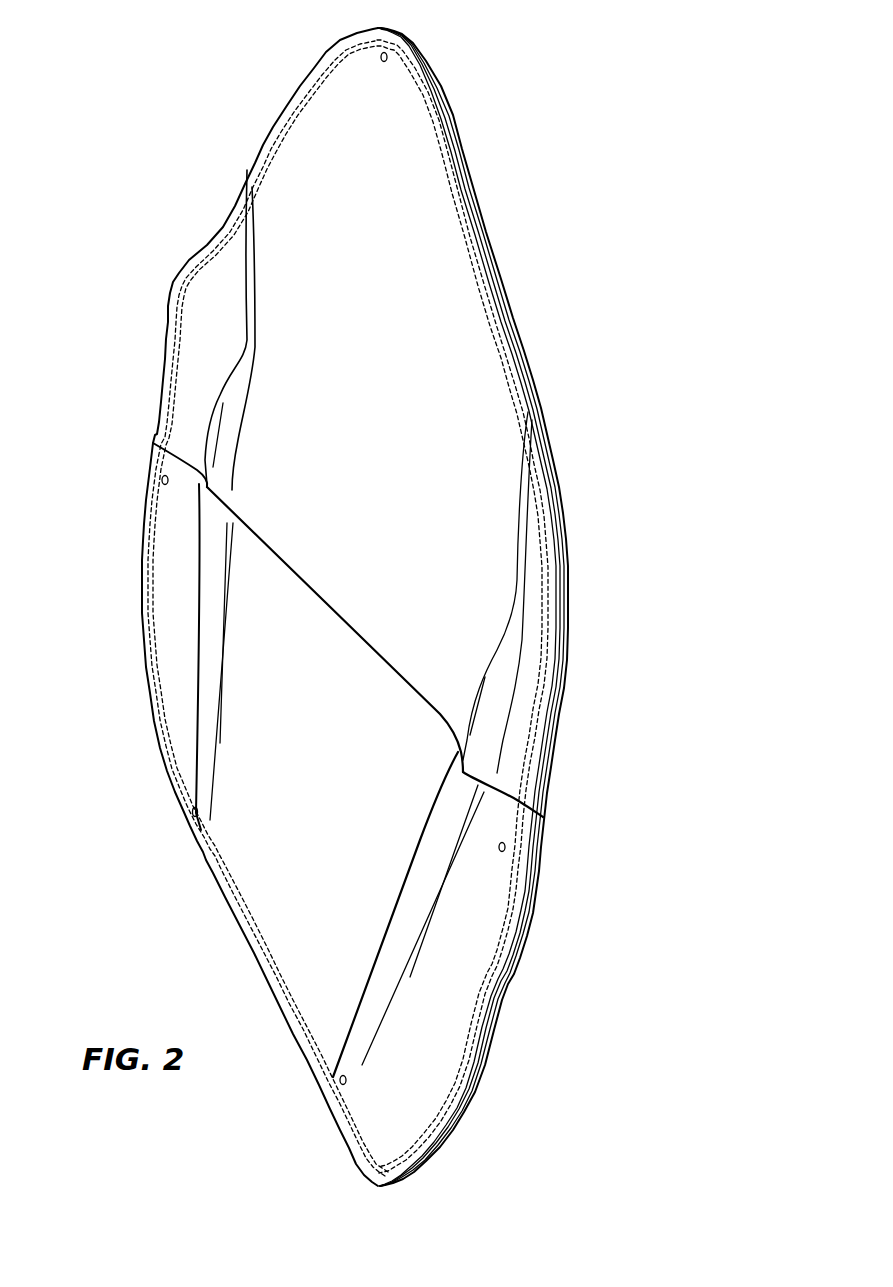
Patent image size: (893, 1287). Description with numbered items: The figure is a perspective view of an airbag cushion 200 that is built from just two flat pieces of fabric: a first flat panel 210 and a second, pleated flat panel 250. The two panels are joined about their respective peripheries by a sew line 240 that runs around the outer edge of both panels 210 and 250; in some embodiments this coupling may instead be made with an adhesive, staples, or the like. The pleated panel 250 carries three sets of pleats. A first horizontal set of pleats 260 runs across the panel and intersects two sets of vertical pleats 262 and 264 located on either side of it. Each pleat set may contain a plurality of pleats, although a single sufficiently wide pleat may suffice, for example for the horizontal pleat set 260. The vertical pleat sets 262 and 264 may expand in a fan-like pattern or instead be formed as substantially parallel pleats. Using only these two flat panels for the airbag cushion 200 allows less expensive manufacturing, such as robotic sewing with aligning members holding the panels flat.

The airbag cushion 200 is at (517, 138).
The first flat panel 210 is at (523, 347).
The sew line 240 is at (415, 78).
The second, pleated flat panel 250 is at (458, 302).
The horizontal set of pleats 260 is at (360, 617).
The vertical pleat set 262 is at (223, 560).
The vertical pleat set 264 is at (518, 603).